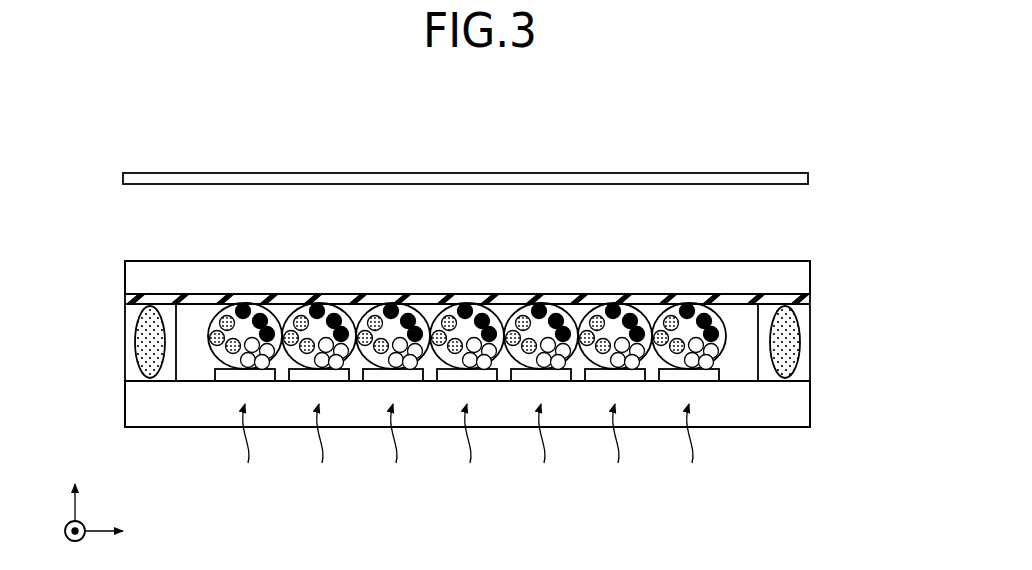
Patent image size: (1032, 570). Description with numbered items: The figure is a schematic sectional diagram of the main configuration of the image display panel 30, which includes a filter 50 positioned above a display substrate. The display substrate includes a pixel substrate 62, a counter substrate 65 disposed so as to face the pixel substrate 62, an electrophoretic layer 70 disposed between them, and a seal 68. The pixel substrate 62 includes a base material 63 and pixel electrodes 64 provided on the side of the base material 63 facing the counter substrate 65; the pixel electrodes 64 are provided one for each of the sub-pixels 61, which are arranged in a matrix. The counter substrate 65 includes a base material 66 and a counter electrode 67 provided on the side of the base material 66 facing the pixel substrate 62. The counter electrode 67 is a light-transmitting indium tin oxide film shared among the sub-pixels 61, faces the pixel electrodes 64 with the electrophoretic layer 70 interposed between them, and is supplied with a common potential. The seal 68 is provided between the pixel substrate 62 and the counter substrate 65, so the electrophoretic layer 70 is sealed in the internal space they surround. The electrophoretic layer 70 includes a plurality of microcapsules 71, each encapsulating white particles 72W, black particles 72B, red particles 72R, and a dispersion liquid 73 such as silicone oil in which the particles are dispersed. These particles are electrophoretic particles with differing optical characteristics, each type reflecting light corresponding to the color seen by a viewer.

The image display panel 30 is at (494, 129).
The filter 50 is at (758, 158).
The sub-pixels 61 is at (466, 448).
The pixel substrate 62 is at (869, 382).
The base material 63 is at (793, 402).
The pixel electrodes 64 is at (707, 378).
The counter substrate 65 is at (66, 267).
The base material 66 is at (125, 274).
The counter electrode 67 is at (125, 299).
The seal 68 is at (810, 349).
The electrophoretic layer 70 is at (188, 338).
The microcapsules 71 is at (723, 337).
The red particles 72R is at (672, 315).
The black particles 72B is at (714, 327).
The white particles 72W is at (712, 353).
The dispersion liquid 73 is at (687, 325).